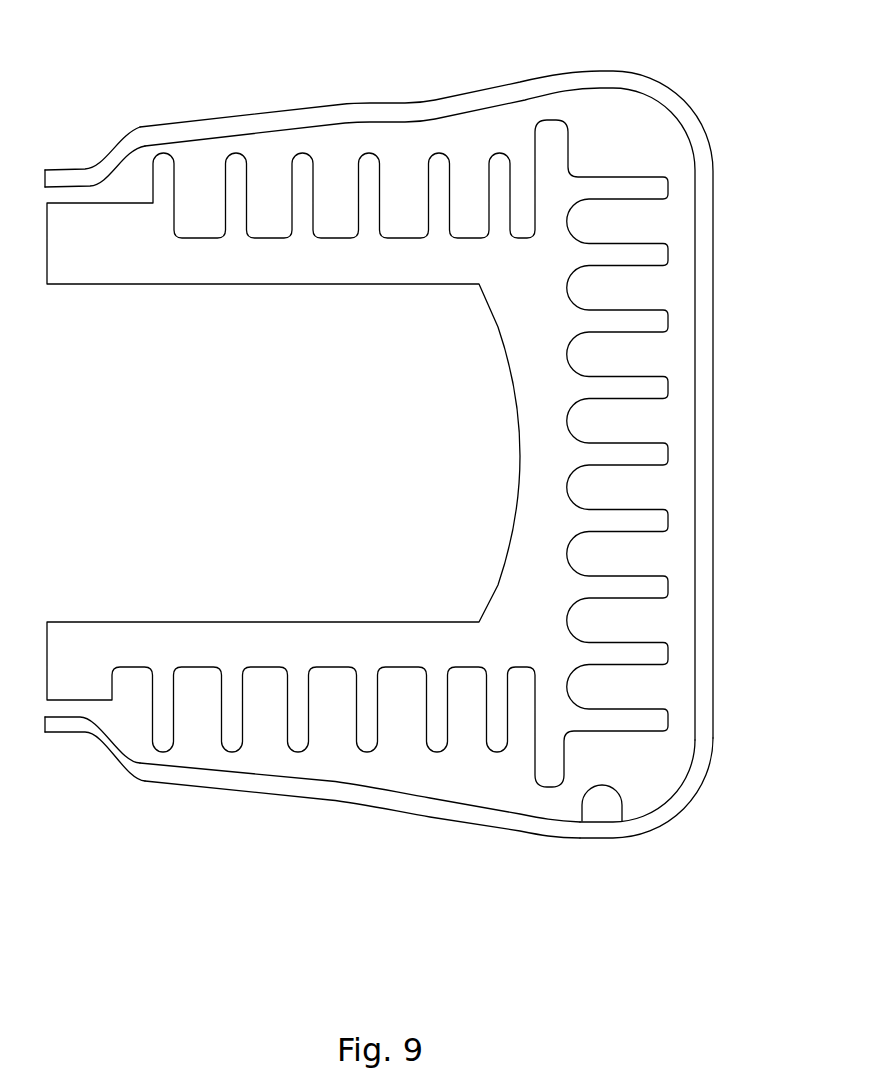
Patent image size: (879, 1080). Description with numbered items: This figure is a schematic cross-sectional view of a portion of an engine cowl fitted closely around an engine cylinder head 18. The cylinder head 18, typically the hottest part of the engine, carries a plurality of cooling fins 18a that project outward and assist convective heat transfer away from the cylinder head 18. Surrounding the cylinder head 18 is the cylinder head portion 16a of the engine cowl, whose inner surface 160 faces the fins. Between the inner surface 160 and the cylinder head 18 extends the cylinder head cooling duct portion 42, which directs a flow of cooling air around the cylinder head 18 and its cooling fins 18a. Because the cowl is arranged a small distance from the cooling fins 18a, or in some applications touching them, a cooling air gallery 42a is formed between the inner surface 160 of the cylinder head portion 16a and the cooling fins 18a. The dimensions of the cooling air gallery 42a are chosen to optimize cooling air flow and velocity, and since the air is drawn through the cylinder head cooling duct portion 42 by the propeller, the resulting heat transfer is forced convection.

The cylinder head 18 is at (504, 347).
The cooling fins 18a is at (369, 153).
The cylinder head portion 16a is at (713, 258).
The cylinder head cooling duct portion 42 is at (128, 182).
The cooling air gallery 42a is at (638, 778).
The inner surface 160 is at (597, 790).